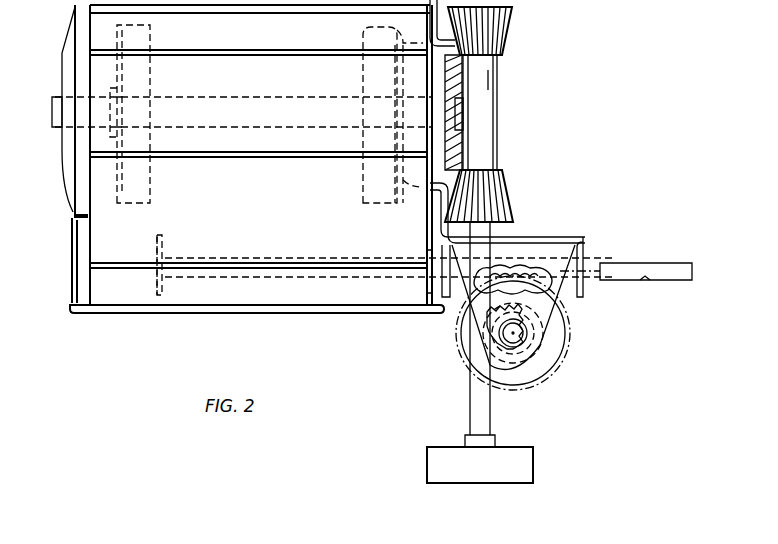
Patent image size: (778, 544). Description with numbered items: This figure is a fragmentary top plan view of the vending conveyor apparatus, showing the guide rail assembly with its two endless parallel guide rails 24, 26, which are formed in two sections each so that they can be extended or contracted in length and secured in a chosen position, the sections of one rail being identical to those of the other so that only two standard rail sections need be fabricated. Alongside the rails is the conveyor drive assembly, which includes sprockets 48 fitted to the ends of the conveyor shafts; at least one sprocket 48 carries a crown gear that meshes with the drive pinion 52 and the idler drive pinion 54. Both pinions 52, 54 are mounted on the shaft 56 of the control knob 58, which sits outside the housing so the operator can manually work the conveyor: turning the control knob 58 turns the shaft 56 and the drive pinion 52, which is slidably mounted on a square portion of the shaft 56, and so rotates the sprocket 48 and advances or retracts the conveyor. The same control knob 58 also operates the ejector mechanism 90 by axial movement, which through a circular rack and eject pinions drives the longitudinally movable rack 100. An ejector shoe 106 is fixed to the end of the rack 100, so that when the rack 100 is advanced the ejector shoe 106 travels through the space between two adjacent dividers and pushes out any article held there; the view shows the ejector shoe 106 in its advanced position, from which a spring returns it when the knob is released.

The guide rail 24 is at (120, 203).
The guide rail 26 is at (390, 203).
The sprocket 48 is at (68, 180).
The drive pinion 52 is at (513, 200).
The idler drive pinion 54 is at (508, 38).
The shaft 56 is at (487, 418).
The control knob 58 is at (508, 475).
The ejector mechanism 90 is at (578, 350).
The rack 100 is at (608, 265).
The ejector shoe 106 is at (163, 246).